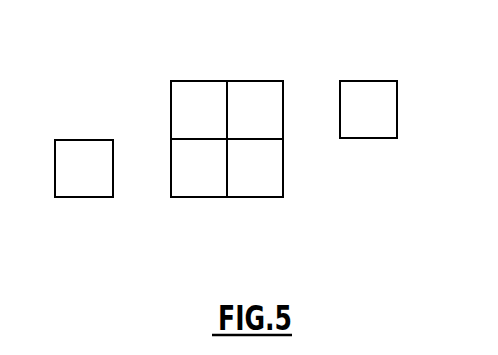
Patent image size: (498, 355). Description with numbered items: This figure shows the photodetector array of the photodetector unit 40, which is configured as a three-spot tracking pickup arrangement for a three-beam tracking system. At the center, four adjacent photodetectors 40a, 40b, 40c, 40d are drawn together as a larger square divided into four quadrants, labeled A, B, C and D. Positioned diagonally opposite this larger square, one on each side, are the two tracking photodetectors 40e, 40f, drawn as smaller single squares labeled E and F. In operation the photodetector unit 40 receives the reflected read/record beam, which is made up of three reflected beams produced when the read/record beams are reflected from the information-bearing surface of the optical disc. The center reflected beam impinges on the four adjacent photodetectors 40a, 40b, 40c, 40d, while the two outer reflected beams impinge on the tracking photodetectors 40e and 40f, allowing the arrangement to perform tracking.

The photodetector unit 40 is at (247, 158).
The photodetector 40a is at (213, 81).
The photodetector 40b is at (271, 81).
The photodetector 40c is at (265, 197).
The photodetector 40d is at (205, 197).
The tracking photodetector 40e is at (380, 138).
The tracking photodetector 40f is at (98, 197).